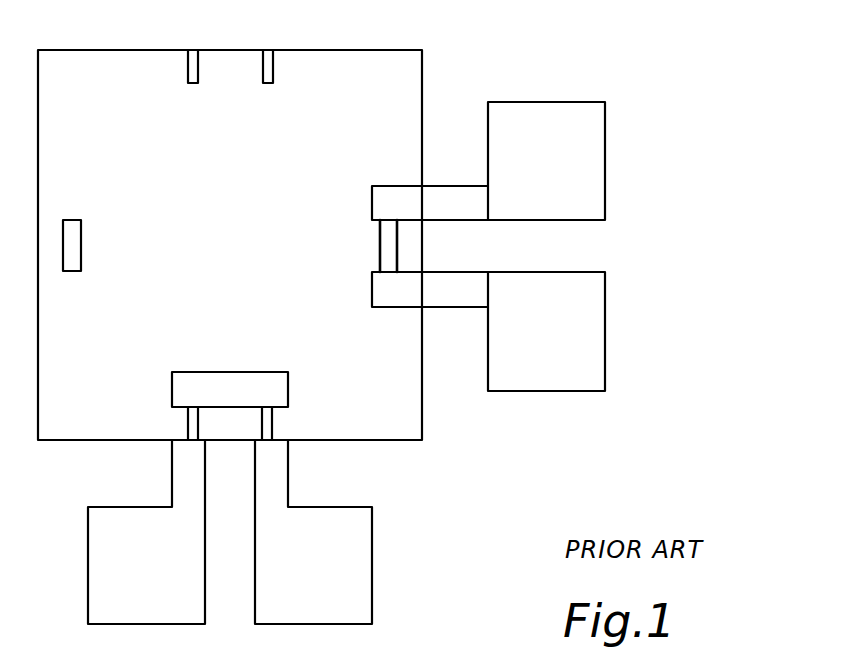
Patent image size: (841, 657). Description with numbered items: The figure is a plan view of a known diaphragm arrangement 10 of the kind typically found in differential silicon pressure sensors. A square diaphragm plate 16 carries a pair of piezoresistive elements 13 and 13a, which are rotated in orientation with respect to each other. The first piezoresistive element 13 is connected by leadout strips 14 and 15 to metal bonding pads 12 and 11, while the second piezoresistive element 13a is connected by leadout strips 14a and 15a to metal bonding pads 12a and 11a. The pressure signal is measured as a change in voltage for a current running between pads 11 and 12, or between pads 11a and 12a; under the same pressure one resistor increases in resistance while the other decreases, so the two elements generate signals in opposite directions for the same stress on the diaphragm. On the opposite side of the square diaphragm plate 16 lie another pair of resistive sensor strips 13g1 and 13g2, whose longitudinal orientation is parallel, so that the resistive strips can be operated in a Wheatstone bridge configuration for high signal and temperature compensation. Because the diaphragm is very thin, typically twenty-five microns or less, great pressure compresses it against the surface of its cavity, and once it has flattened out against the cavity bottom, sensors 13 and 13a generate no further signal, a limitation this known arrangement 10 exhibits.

The diaphragm arrangement 10 is at (562, 61).
The metal bonding pad 11 is at (566, 170).
The metal bonding pad 12 is at (566, 349).
The piezoresistive element 13 is at (378, 240).
The leadout strip 14 is at (372, 290).
The leadout strip 15 is at (394, 187).
The diaphragm plate 16 is at (90, 99).
The resistive sensor strip 13g1 is at (273, 68).
The resistive sensor strip 13g2 is at (82, 222).
The piezoresistive element 13a is at (172, 384).
The leadout strip 14a is at (188, 420).
The leadout strip 15a is at (273, 423).
The metal bonding pad 12a is at (172, 583).
The metal bonding pad 11a is at (340, 583).